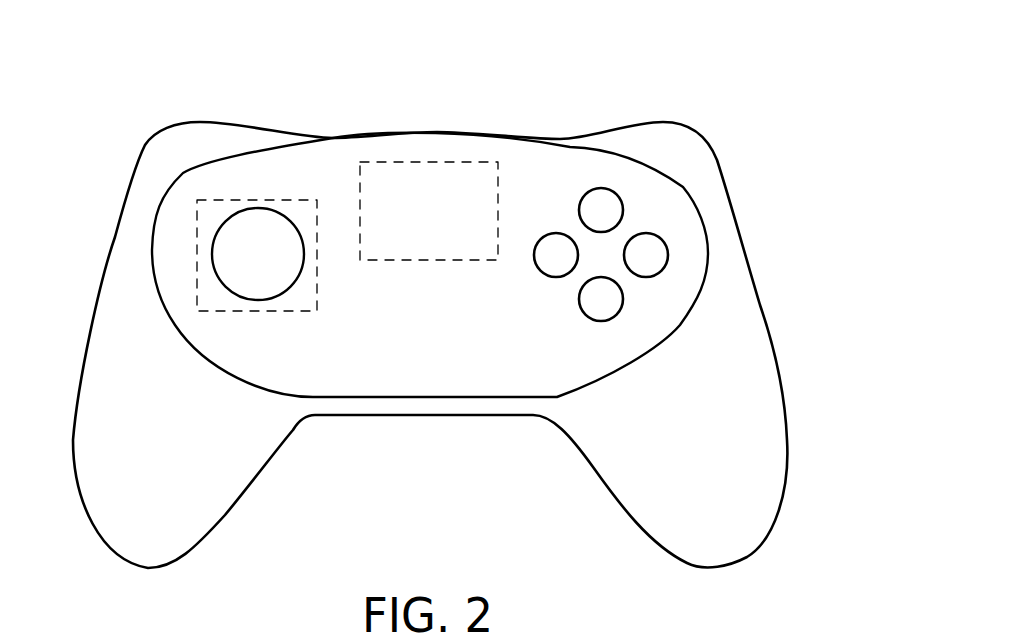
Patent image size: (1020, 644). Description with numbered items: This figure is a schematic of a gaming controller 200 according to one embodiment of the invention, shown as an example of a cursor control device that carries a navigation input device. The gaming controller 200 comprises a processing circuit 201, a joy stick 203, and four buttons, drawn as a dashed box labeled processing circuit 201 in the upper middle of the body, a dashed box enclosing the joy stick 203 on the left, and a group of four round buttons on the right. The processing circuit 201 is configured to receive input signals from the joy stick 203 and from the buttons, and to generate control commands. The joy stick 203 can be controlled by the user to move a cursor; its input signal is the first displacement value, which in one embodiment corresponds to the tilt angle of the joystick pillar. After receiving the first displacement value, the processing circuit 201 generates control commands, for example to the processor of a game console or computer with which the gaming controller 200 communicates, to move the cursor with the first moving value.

The gaming controller 200 is at (668, 87).
The processing circuit 201 is at (420, 160).
The joy stick 203 is at (297, 327).